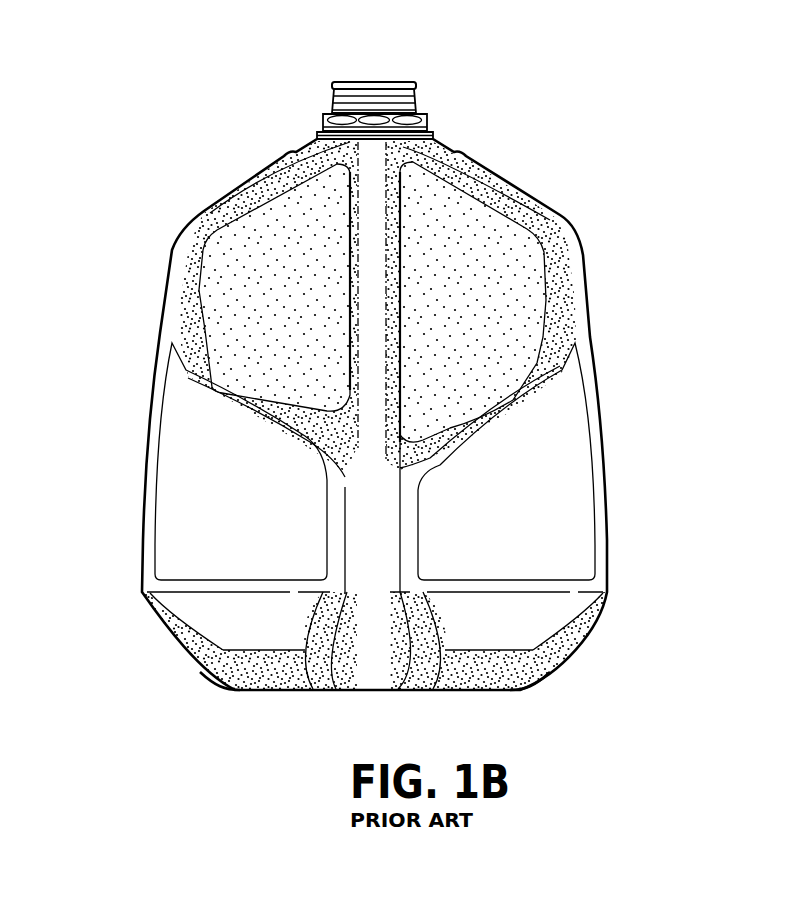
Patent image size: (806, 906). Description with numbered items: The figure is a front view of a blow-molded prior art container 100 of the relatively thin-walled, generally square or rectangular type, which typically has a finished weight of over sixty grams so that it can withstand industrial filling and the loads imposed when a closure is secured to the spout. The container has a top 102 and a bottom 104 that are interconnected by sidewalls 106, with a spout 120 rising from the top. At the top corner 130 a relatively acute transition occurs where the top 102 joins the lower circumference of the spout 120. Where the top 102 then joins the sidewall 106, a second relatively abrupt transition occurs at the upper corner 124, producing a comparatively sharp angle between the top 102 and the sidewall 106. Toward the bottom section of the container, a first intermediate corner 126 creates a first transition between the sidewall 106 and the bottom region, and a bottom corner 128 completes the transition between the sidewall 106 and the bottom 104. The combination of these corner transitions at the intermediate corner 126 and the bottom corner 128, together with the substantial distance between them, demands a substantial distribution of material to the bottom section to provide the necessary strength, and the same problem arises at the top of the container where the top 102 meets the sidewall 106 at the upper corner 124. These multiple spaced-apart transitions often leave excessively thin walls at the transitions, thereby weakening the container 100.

The prior art container 100 is at (600, 176).
The top 102 is at (490, 170).
The bottom 104 is at (297, 688).
The sidewall 106 is at (517, 511).
The spout 120 is at (370, 80).
The upper corner 124 is at (215, 201).
The first intermediate corner 126 is at (150, 610).
The bottom corner 128 is at (213, 676).
The top corner 130 is at (431, 128).